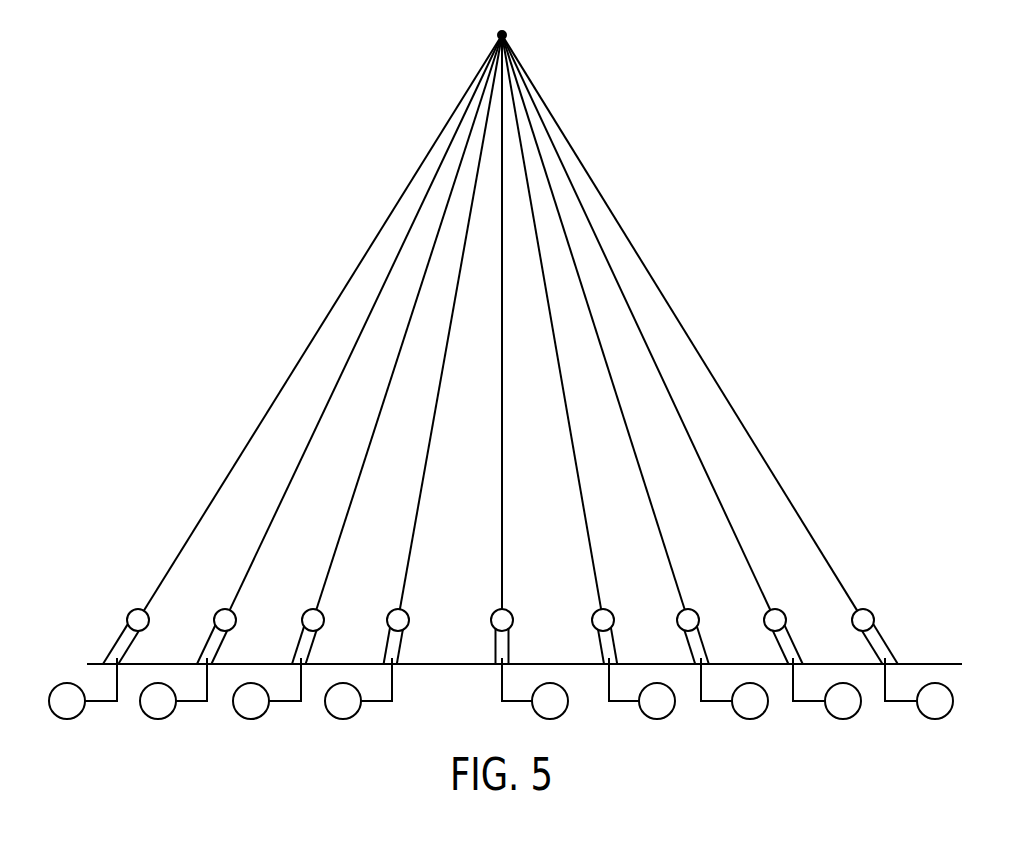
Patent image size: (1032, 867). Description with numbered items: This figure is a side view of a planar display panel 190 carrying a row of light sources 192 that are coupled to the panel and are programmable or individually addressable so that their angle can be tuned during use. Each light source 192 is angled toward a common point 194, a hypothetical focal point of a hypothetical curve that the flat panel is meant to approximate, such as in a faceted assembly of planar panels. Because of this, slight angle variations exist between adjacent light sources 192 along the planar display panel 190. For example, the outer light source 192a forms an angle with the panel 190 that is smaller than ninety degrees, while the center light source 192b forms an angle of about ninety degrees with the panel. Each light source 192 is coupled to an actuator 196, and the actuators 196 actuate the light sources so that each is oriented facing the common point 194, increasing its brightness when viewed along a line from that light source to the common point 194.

The planar display panel 190 is at (925, 664).
The light source 192 is at (125, 642).
The light source 192a is at (878, 642).
The center light source 192b is at (509, 654).
The common point 194 is at (498, 37).
The actuator 196 is at (71, 719).